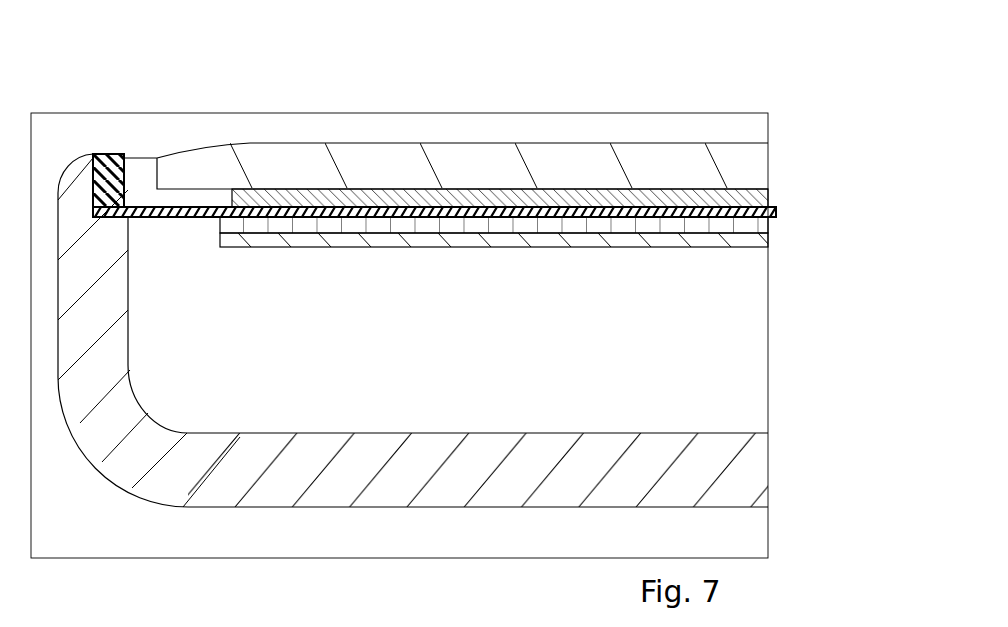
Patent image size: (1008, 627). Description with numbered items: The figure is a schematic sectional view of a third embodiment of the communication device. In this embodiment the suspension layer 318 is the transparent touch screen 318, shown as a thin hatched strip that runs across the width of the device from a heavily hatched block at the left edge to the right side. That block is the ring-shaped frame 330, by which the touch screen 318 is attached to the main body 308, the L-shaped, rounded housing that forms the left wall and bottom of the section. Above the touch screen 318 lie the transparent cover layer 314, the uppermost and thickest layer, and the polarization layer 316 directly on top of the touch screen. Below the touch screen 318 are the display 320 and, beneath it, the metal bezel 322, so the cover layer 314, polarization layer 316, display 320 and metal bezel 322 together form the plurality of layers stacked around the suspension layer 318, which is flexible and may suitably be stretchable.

The main body 308 is at (268, 468).
The transparent cover layer 314 is at (382, 158).
The polarization layer 316 is at (753, 200).
The suspension layer 318 is at (188, 207).
The display 320 is at (760, 225).
The metal bezel 322 is at (753, 238).
The ring-shaped frame 330 is at (108, 155).